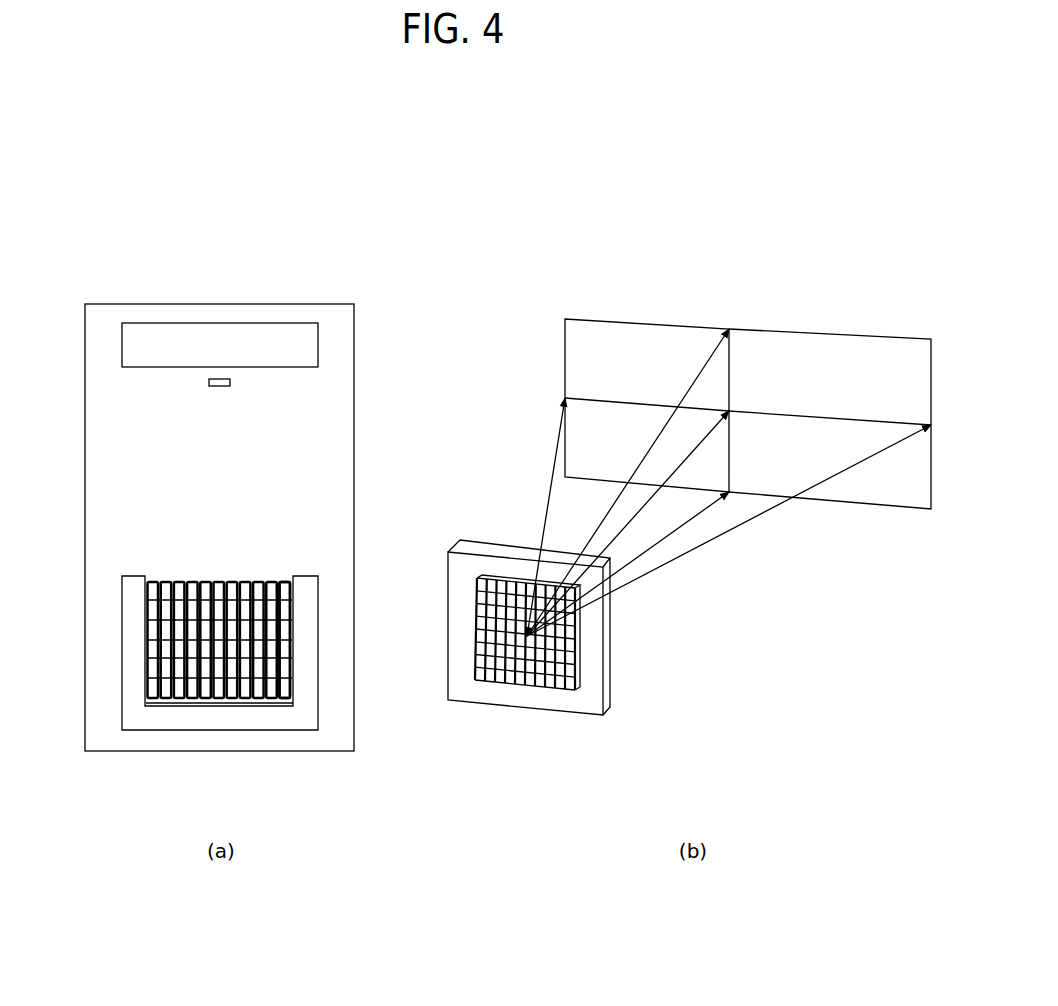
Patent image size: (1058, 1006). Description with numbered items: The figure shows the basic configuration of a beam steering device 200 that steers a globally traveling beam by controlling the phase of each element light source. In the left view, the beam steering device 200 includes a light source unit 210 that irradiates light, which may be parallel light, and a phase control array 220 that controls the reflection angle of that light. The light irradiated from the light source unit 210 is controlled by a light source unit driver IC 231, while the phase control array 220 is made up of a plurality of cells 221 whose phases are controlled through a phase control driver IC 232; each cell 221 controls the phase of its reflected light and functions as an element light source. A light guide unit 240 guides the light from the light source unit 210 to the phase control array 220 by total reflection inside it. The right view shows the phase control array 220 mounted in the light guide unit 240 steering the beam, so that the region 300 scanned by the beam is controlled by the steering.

The beam steering device 200 is at (32, 247).
The light source unit 210 is at (215, 382).
The phase control array 220 is at (220, 698).
The cell 221 is at (283, 687).
The light source unit driver IC 231 is at (150, 338).
The phase control driver IC 232 is at (130, 648).
The light guide unit 240 is at (103, 500).
The region 300 is at (613, 343).